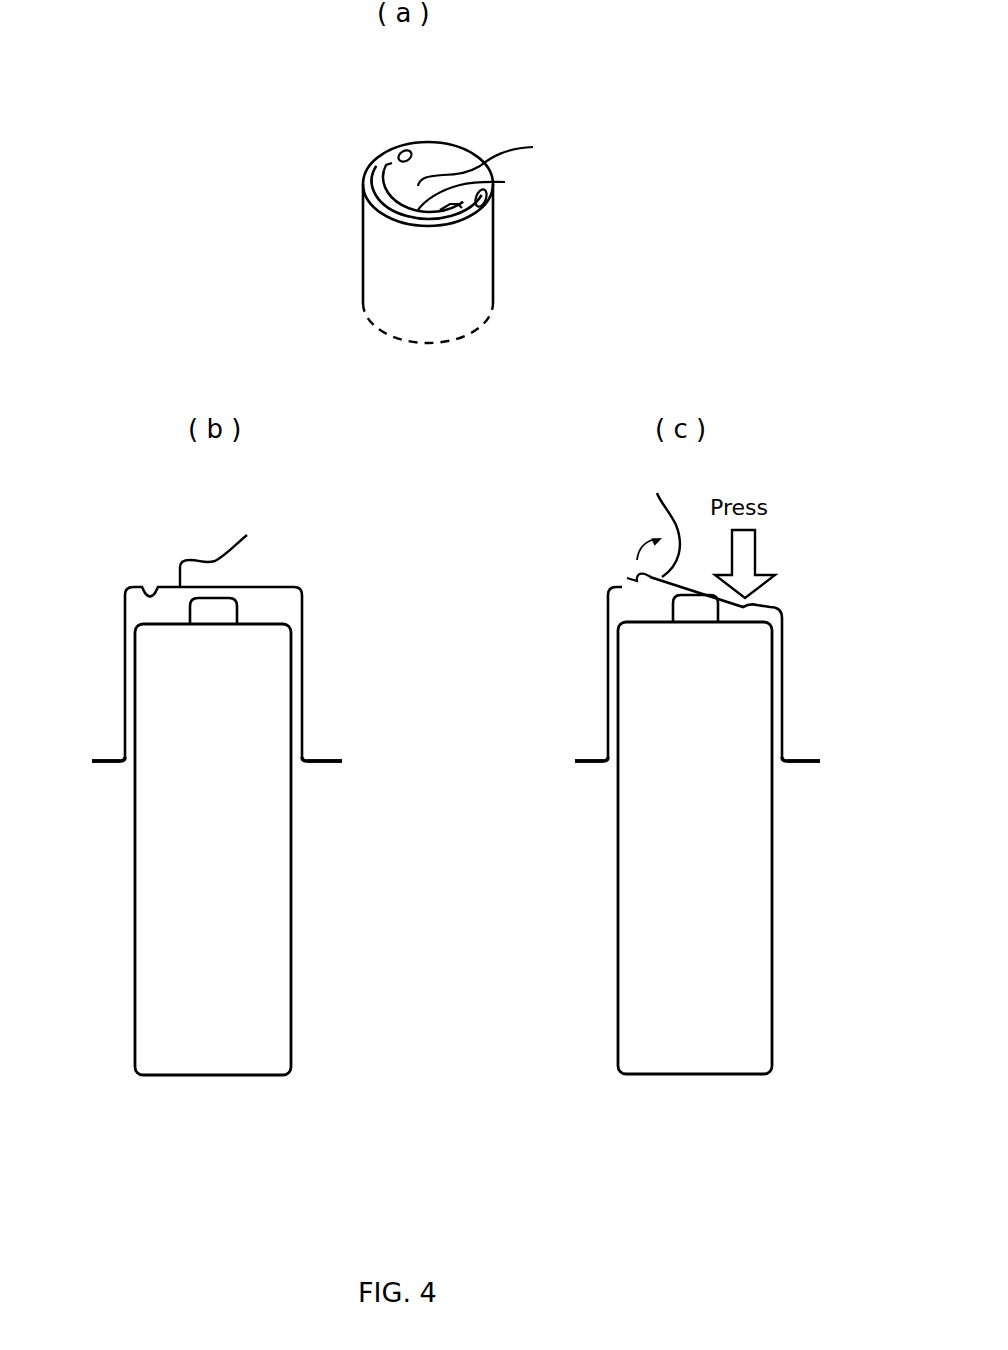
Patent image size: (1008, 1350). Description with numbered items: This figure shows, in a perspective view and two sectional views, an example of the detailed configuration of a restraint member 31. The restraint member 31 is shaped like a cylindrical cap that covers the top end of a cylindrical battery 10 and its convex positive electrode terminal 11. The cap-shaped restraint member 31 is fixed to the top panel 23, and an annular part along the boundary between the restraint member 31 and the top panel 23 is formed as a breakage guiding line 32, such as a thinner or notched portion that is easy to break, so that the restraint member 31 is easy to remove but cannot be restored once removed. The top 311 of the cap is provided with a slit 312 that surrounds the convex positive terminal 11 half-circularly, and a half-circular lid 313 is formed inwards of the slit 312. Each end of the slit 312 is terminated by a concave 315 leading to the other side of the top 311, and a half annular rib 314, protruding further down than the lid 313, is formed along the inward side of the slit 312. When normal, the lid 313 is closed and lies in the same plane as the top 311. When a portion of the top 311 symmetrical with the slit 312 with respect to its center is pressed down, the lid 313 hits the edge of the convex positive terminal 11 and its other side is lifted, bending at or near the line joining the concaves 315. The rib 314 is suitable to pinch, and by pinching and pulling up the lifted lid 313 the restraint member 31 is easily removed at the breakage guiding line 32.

The cylindrical battery 10 is at (93, 902).
The electrode terminal 11 is at (87, 611).
The top panel 23 is at (332, 754).
The restraint member 31 is at (63, 693).
The breakage guiding line 32 is at (813, 708).
The top 311 is at (502, 68).
The slit 312 is at (627, 578).
The lid 313 is at (430, 361).
The rib 314 is at (595, 192).
The concave 315 is at (308, 95).